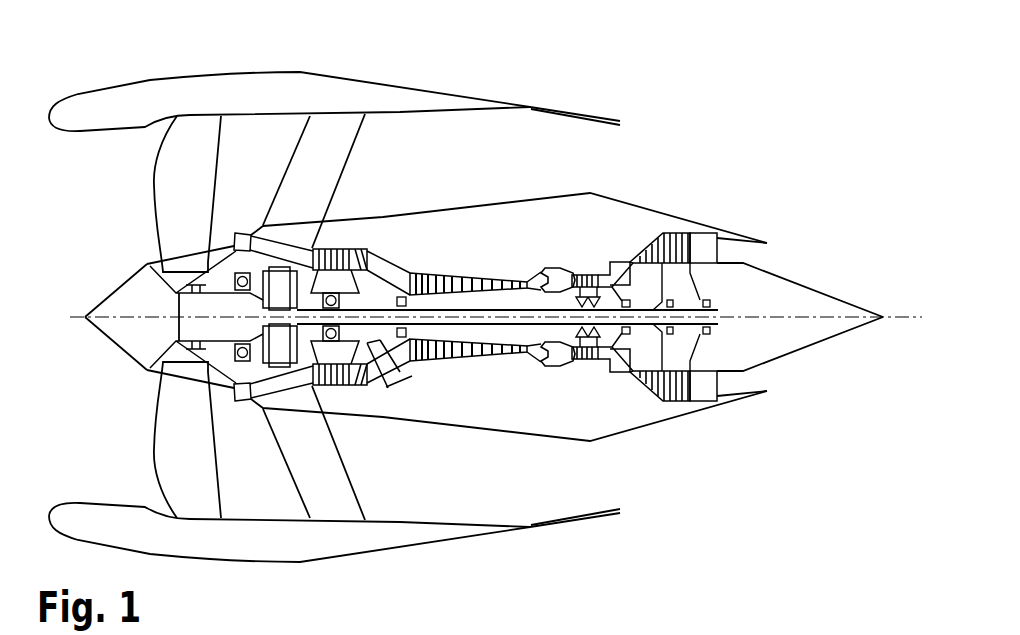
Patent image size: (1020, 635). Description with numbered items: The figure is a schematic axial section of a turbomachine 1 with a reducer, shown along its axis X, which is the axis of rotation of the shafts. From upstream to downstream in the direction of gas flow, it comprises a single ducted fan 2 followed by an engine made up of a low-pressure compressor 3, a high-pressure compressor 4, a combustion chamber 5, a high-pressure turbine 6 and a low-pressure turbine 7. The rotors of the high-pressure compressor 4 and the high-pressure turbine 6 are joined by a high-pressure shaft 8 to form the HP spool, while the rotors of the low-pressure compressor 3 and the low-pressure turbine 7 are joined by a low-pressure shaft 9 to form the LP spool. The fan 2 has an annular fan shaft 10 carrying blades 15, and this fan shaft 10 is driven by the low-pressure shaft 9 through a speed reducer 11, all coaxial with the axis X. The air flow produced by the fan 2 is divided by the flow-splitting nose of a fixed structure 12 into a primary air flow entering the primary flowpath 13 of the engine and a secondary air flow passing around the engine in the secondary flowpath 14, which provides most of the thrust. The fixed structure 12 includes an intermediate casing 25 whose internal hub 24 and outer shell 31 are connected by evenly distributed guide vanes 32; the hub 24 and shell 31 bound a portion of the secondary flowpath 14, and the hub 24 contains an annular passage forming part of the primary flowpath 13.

The turbomachine 1 is at (140, 62).
The ducted fan 2 is at (142, 200).
The low-pressure compressor 3 is at (347, 249).
The high-pressure compressor 4 is at (458, 273).
The combustion chamber 5 is at (554, 265).
The high-pressure turbine 6 is at (582, 268).
The low-pressure turbine 7 is at (660, 235).
The high-pressure shaft 8 is at (530, 353).
The low-pressure shaft 9 is at (474, 326).
The fan shaft 10 is at (220, 296).
The speed reducer 11 is at (232, 362).
The fixed structure 12 is at (230, 240).
The primary flowpath 13 is at (292, 382).
The secondary flowpath 14 is at (448, 147).
The blades 15 is at (183, 172).
The internal hub 24 is at (296, 222).
The intermediate casing 25 is at (281, 178).
The outer shell 31 is at (345, 117).
The guide vanes 32 is at (327, 151).
The axis X is at (903, 318).